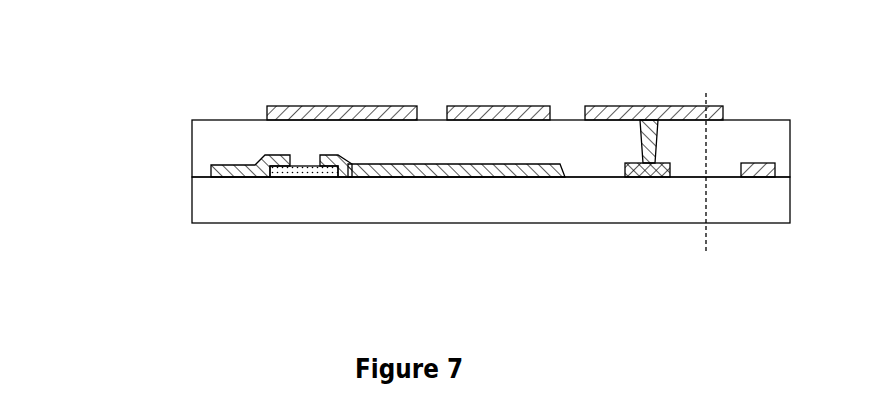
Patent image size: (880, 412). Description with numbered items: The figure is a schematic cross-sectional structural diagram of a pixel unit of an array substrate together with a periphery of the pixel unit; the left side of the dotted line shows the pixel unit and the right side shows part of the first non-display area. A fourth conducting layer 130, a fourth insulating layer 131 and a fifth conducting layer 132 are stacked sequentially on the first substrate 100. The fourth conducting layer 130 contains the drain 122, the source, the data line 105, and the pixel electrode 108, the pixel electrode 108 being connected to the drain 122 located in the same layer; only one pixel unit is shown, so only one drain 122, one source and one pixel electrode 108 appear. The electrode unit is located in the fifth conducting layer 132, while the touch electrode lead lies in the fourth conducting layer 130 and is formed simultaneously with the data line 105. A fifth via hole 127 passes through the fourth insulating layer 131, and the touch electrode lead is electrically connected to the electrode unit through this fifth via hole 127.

The first substrate 100 is at (197, 207).
The fourth insulating layer 131 is at (197, 143).
The fifth conducting layer 132 is at (631, 107).
The fourth conducting layer 130 is at (262, 178).
The drain 122 is at (347, 178).
The pixel electrode 108 is at (487, 170).
The fifth via hole 127 is at (652, 150).
The data line 105 is at (776, 170).